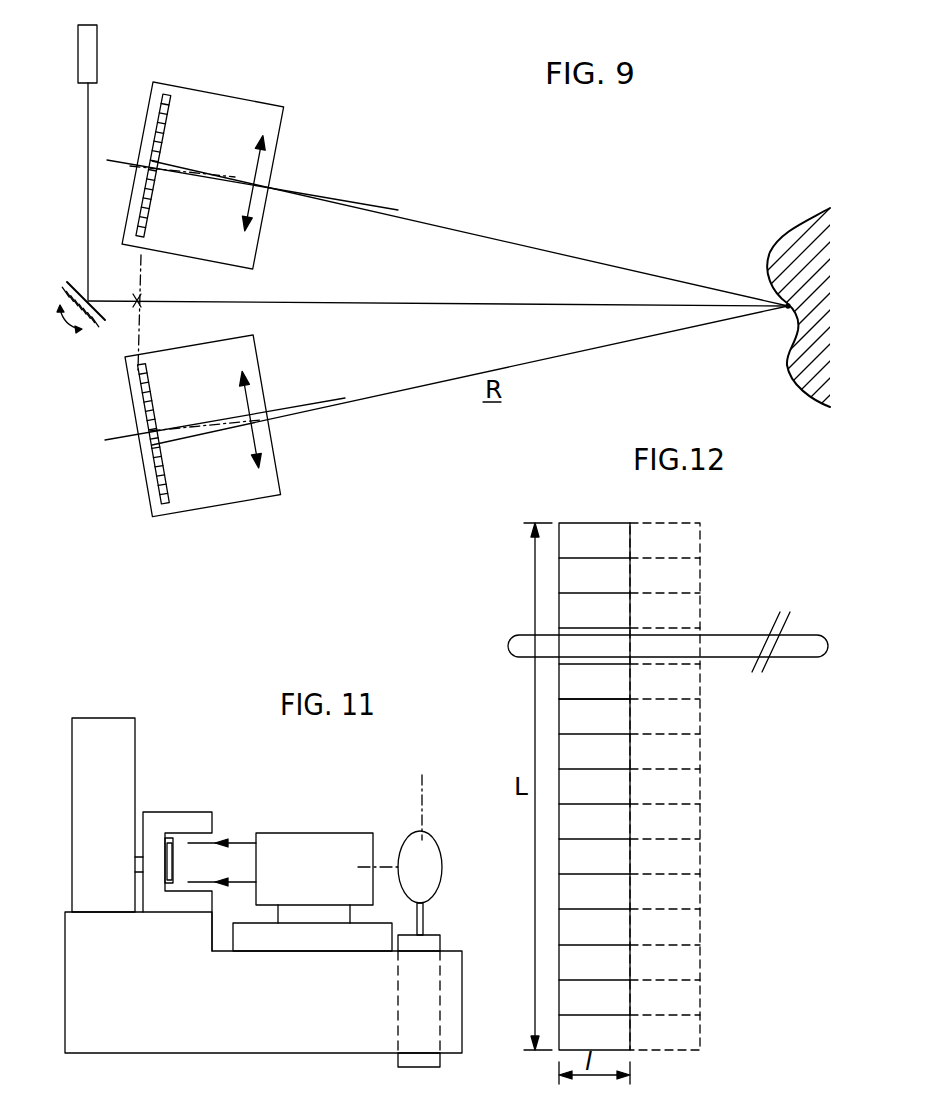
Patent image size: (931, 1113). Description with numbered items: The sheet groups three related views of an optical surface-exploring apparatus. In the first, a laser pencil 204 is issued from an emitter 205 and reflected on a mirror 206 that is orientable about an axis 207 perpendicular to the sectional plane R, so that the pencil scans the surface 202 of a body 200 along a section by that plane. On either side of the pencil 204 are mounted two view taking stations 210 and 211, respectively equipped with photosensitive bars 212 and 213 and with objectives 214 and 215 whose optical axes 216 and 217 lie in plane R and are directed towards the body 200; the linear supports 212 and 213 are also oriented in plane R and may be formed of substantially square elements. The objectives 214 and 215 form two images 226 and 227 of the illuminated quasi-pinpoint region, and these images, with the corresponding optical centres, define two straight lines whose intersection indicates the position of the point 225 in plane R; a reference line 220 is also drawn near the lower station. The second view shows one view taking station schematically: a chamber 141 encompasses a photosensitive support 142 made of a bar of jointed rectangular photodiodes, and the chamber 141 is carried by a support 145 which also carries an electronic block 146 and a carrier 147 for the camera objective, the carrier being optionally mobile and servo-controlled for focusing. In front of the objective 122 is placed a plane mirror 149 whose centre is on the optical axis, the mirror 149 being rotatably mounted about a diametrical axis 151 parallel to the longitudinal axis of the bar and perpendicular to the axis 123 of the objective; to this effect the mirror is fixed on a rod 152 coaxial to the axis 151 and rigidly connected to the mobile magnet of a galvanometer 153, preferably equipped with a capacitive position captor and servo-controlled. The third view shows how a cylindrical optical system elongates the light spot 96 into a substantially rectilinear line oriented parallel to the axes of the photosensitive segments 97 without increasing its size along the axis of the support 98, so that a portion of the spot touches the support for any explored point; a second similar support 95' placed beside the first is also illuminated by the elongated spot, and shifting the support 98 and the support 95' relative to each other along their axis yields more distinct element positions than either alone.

In FIG. 9, the body 200 is at (838, 292).
In FIG. 9, the surface 202 is at (770, 258).
In FIG. 9, the laser pencil 204 is at (490, 303).
In FIG. 9, the emitter 205 is at (95, 50).
In FIG. 9, the mirror 206 is at (75, 284).
In FIG. 9, the axis 207 is at (135, 300).
In FIG. 9, the view taking station 210 is at (213, 150).
In FIG. 9, the view taking station 211 is at (208, 456).
In FIG. 9, the photosensitive bar 212 is at (174, 142).
In FIG. 9, the photosensitive bar 213 is at (111, 441).
In FIG. 9, the objective 214 is at (297, 165).
In FIG. 9, the objective 215 is at (283, 414).
In FIG. 9, the optical axis 216 is at (385, 205).
In FIG. 9, the optical axis 217 is at (340, 402).
In FIG. 9, the detector reference line 220 is at (143, 338).
In FIG. 9, the point 225 is at (785, 312).
In FIG. 9, the image 226 is at (147, 168).
In FIG. 9, the image 227 is at (150, 445).
In FIG. 11, the objective 122 is at (287, 847).
In FIG. 11, the axis of the objective 123 is at (385, 862).
In FIG. 11, the chamber 141 is at (200, 816).
In FIG. 11, the photosensitive support 142 is at (170, 828).
In FIG. 11, the support 145 is at (172, 1025).
In FIG. 11, the electronic block 146 is at (108, 738).
In FIG. 11, the carrier 147 is at (313, 943).
In FIG. 11, the plane mirror 149 is at (428, 858).
In FIG. 11, the axis 151 is at (424, 790).
In FIG. 11, the rod 152 is at (425, 915).
In FIG. 11, the galvanometer 153 is at (435, 944).
In FIG. 12, the photosensitive support 95' is at (682, 768).
In FIG. 12, the light spot 96 is at (782, 658).
In FIG. 12, the photosensitive segment 97 is at (575, 716).
In FIG. 12, the photosensitive support 98 is at (615, 500).